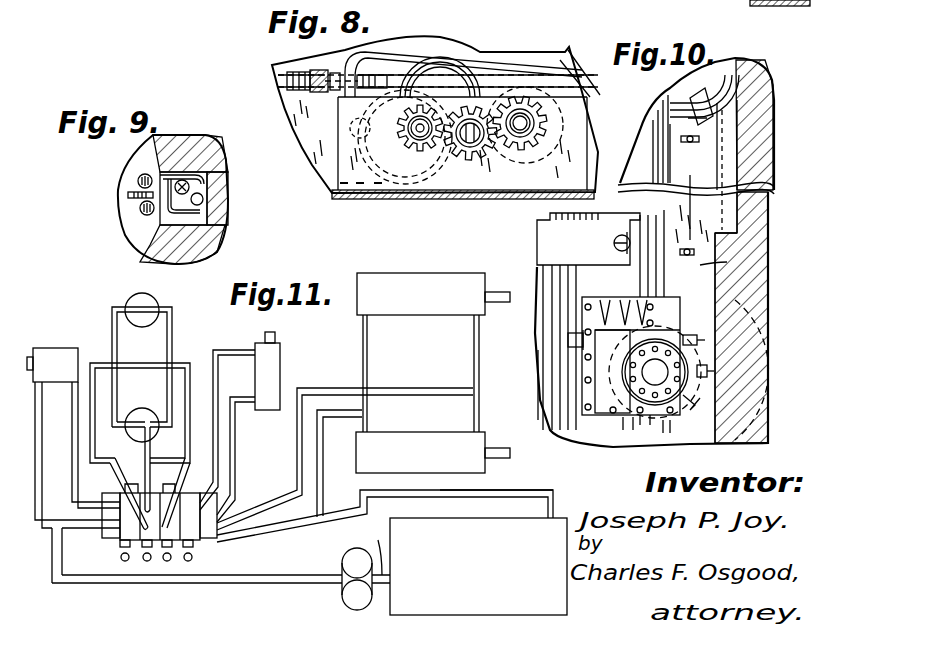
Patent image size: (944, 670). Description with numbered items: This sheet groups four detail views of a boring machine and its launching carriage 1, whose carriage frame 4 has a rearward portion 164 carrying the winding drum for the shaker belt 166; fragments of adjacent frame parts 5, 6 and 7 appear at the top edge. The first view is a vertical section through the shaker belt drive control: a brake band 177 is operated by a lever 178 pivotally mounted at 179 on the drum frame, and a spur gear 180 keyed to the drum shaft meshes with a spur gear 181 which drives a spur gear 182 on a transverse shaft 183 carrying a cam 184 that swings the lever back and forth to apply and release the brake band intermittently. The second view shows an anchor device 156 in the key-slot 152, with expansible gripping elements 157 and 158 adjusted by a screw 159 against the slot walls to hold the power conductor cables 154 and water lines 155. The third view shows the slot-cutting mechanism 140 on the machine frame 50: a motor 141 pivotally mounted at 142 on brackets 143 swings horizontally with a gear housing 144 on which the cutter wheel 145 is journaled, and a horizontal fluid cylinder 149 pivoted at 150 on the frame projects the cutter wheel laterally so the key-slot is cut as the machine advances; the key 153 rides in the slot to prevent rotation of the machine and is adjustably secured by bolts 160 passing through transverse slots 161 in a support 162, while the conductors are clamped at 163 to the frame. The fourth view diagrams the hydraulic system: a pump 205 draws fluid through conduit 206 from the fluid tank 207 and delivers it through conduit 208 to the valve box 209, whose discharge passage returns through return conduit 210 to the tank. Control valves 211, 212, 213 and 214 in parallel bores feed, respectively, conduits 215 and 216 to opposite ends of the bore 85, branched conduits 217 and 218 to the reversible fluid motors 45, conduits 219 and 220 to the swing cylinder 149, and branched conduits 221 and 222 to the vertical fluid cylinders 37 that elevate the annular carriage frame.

In FIG. 9, the launching carriage 1 is at (222, 3).
In FIG. 10, the carriage frame 4 is at (622, 0).
In FIG. 9, the frame part 5 is at (124, 0).
In FIG. 10, the frame part 5 is at (703, 0).
In FIG. 9, the frame part 6 is at (62, 0).
In FIG. 10, the frame part 6 is at (775, 8).
In FIG. 10, the frame part 7 is at (808, 2).
In FIG. 11, the vertical fluid cylinders 37 is at (425, 308).
In FIG. 11, the reversible fluid motors 45 is at (142, 303).
In FIG. 10, the machine frame 50 is at (563, 390).
In FIG. 11, the bore 85 is at (53, 350).
In FIG. 10, the slot-cutting mechanism 140 is at (660, 337).
In FIG. 10, the motor 141 is at (653, 225).
In FIG. 10, the pivotal mounting 142 is at (614, 243).
In FIG. 10, the brackets 143 is at (545, 245).
In FIG. 10, the gear housing 144 is at (613, 390).
In FIG. 10, the cutter wheel 145 is at (687, 415).
In FIG. 10, the horizontal fluid cylinder 149 is at (580, 365).
In FIG. 11, the horizontal fluid cylinder 149 is at (270, 370).
In FIG. 10, the pivot of cylinder 150 is at (570, 343).
In FIG. 9, the key-slot 152 is at (203, 199).
In FIG. 10, the key-slot 152 is at (747, 303).
In FIG. 10, the key 153 is at (727, 213).
In FIG. 9, the power conductor cables 154 is at (188, 175).
In FIG. 10, the power conductor cables 154 is at (707, 67).
In FIG. 9, the water lines 155 is at (208, 199).
In FIG. 10, the water lines 155 is at (733, 80).
In FIG. 9, the anchor devices 156 is at (143, 213).
In FIG. 9, the expansible gripping element 157 is at (203, 170).
In FIG. 9, the expansible gripping element 158 is at (205, 220).
In FIG. 9, the screw 159 is at (143, 196).
In FIG. 10, the bolts 160 is at (690, 143).
In FIG. 10, the transverse slots 161 is at (683, 130).
In FIG. 10, the support 162 is at (727, 262).
In FIG. 10, the clamp 163 is at (715, 108).
In FIG. 8, the rearward portion of carriage frame 164 is at (367, 198).
In FIG. 8, the shaker belt 166 is at (535, 0).
In FIG. 8, the brake band 177 is at (405, 90).
In FIG. 8, the lever 178 is at (467, 62).
In FIG. 8, the pivot 179 is at (318, 182).
In FIG. 8, the spur gear 180 is at (420, 140).
In FIG. 8, the spur gear 181 is at (470, 150).
In FIG. 8, the spur gear 182 is at (545, 127).
In FIG. 8, the transverse shaft 183 is at (521, 118).
In FIG. 8, the cam 184 is at (560, 131).
In FIG. 11, the pump 205 is at (350, 563).
In FIG. 11, the conduit 206 is at (369, 548).
In FIG. 11, the fluid tank 207 is at (460, 543).
In FIG. 11, the conduit 208 is at (275, 583).
In FIG. 11, the valve box 209 is at (107, 517).
In FIG. 11, the return conduit 210 is at (524, 498).
In FIG. 11, the control valve 211 is at (122, 561).
In FIG. 11, the control valve 212 is at (146, 561).
In FIG. 11, the control valve 213 is at (167, 561).
In FIG. 11, the control valve 214 is at (189, 561).
In FIG. 11, the conduit 215 is at (40, 522).
In FIG. 11, the conduit 216 is at (76, 492).
In FIG. 11, the branched conduit 217 is at (112, 470).
In FIG. 11, the branched conduit 218 is at (188, 455).
In FIG. 11, the conduit 219 is at (213, 363).
In FIG. 11, the conduit 220 is at (232, 460).
In FIG. 11, the branched conduit 221 is at (297, 475).
In FIG. 11, the branched conduit 222 is at (320, 498).